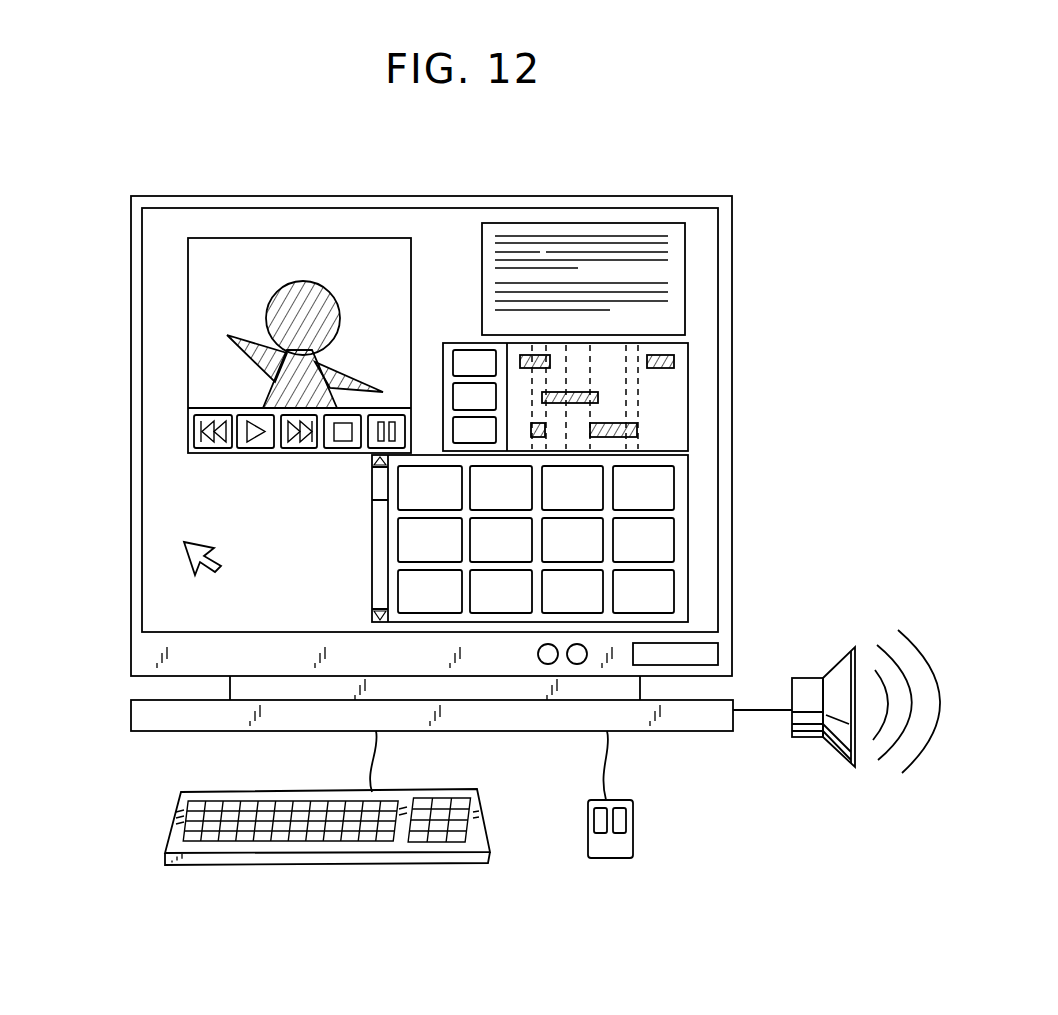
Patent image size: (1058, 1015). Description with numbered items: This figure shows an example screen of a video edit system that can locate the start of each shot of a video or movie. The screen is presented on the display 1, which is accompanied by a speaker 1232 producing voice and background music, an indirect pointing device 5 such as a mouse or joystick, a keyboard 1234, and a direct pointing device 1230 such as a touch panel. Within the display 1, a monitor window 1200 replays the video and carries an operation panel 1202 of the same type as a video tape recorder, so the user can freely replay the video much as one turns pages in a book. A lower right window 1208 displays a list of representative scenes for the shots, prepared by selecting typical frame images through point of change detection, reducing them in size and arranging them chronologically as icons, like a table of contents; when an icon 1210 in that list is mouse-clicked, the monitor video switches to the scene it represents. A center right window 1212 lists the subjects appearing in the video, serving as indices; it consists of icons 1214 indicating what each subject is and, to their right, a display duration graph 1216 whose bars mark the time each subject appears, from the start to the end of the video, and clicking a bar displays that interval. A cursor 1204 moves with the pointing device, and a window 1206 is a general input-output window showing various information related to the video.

The display 1 is at (482, 463).
The indirect pointing device 5 is at (633, 840).
The monitor window 1200 is at (187, 340).
The operation panel 1202 is at (188, 436).
The cursor 1204 is at (190, 557).
The general input-output window 1206 is at (687, 300).
The lower right window 1208 is at (594, 526).
The icon 1210 is at (665, 493).
The center right window 1212 is at (616, 372).
The icons 1214 is at (460, 360).
The display duration graph 1216 is at (672, 417).
The direct pointing device 1230 is at (718, 583).
The speaker 1232 is at (815, 737).
The keyboard 1234 is at (360, 866).